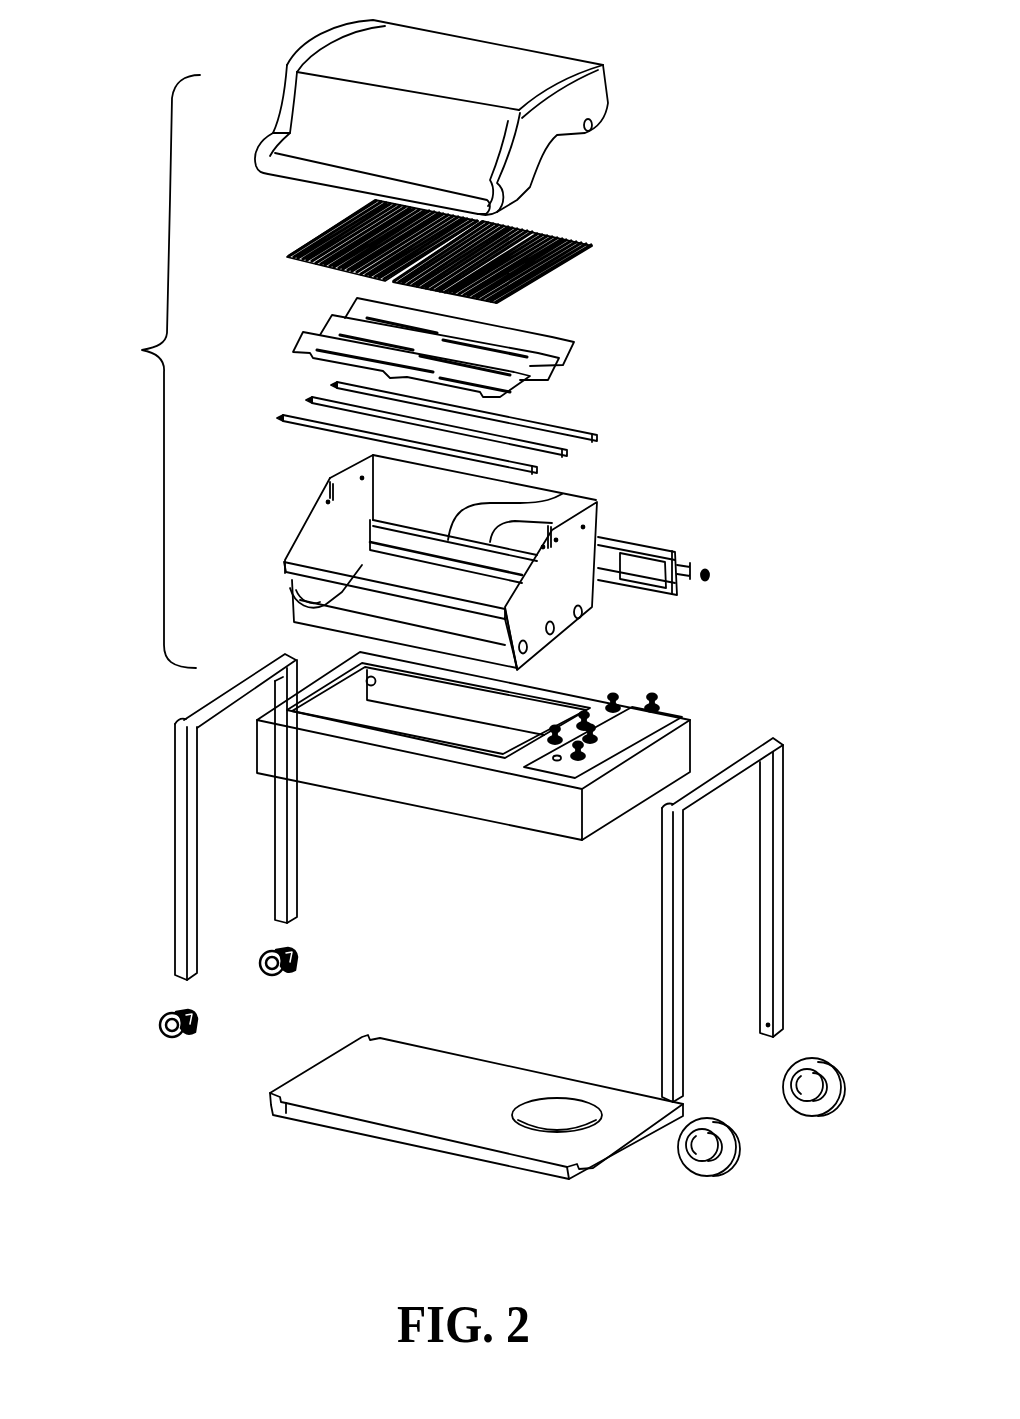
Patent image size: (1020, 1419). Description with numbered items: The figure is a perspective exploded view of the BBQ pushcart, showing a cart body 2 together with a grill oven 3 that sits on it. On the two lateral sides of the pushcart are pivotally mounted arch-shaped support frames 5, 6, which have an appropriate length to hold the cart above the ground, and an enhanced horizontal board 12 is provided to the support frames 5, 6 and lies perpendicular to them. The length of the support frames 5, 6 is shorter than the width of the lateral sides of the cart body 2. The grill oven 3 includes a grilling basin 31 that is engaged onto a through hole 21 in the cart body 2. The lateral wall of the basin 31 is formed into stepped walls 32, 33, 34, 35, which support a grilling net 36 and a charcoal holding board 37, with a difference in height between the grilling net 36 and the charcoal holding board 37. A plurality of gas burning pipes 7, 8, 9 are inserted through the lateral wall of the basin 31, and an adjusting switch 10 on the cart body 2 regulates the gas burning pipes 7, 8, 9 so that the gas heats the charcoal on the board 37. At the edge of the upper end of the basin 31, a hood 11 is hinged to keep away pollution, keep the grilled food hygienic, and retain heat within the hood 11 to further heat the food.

The cart body 2 is at (436, 800).
The grill oven 3 is at (158, 371).
The support frame 5 is at (183, 838).
The support frame 6 is at (767, 806).
The gas burning pipe 7 is at (358, 433).
The gas burning pipe 8 is at (567, 457).
The gas burning pipe 9 is at (597, 440).
The adjusting switch 10 is at (625, 722).
The hood 11 is at (527, 70).
The enhanced horizontal board 12 is at (355, 1100).
The through hole 21 is at (488, 742).
The grilling basin 31 is at (577, 591).
The stepped wall 32 is at (290, 592).
The stepped wall 33 is at (560, 494).
The stepped wall 34 is at (552, 530).
The stepped wall 35 is at (418, 594).
The grilling net 36 is at (573, 260).
The charcoal holding board 37 is at (550, 331).